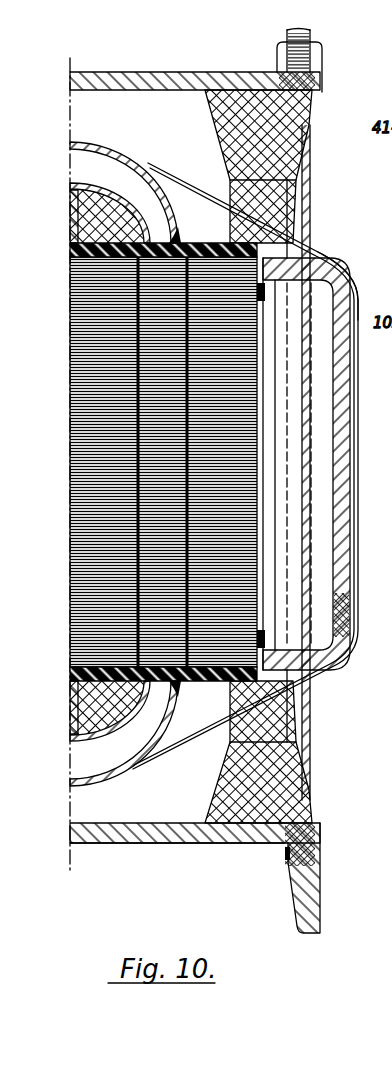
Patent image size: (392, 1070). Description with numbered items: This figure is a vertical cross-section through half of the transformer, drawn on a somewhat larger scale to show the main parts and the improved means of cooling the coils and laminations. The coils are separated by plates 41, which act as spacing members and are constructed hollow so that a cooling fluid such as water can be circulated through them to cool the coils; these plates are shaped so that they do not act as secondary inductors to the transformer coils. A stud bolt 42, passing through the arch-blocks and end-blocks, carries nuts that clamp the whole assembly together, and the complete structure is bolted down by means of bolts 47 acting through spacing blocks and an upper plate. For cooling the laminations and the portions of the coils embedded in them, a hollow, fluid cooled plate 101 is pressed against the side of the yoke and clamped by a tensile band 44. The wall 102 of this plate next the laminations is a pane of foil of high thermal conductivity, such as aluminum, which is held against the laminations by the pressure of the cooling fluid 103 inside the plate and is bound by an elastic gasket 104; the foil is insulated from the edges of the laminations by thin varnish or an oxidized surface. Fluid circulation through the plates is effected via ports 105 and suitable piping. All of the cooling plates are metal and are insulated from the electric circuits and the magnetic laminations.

The plate 41 is at (177, 180).
The stud bolt 42 is at (68, 210).
The tensile band 44 is at (314, 256).
The bolt 47 is at (311, 723).
The fluid cooled plate 101 is at (348, 478).
The wall 102 is at (258, 440).
The cooling fluid 103 is at (320, 486).
The elastic gasket 104 is at (262, 296).
The port 105 is at (183, 226).